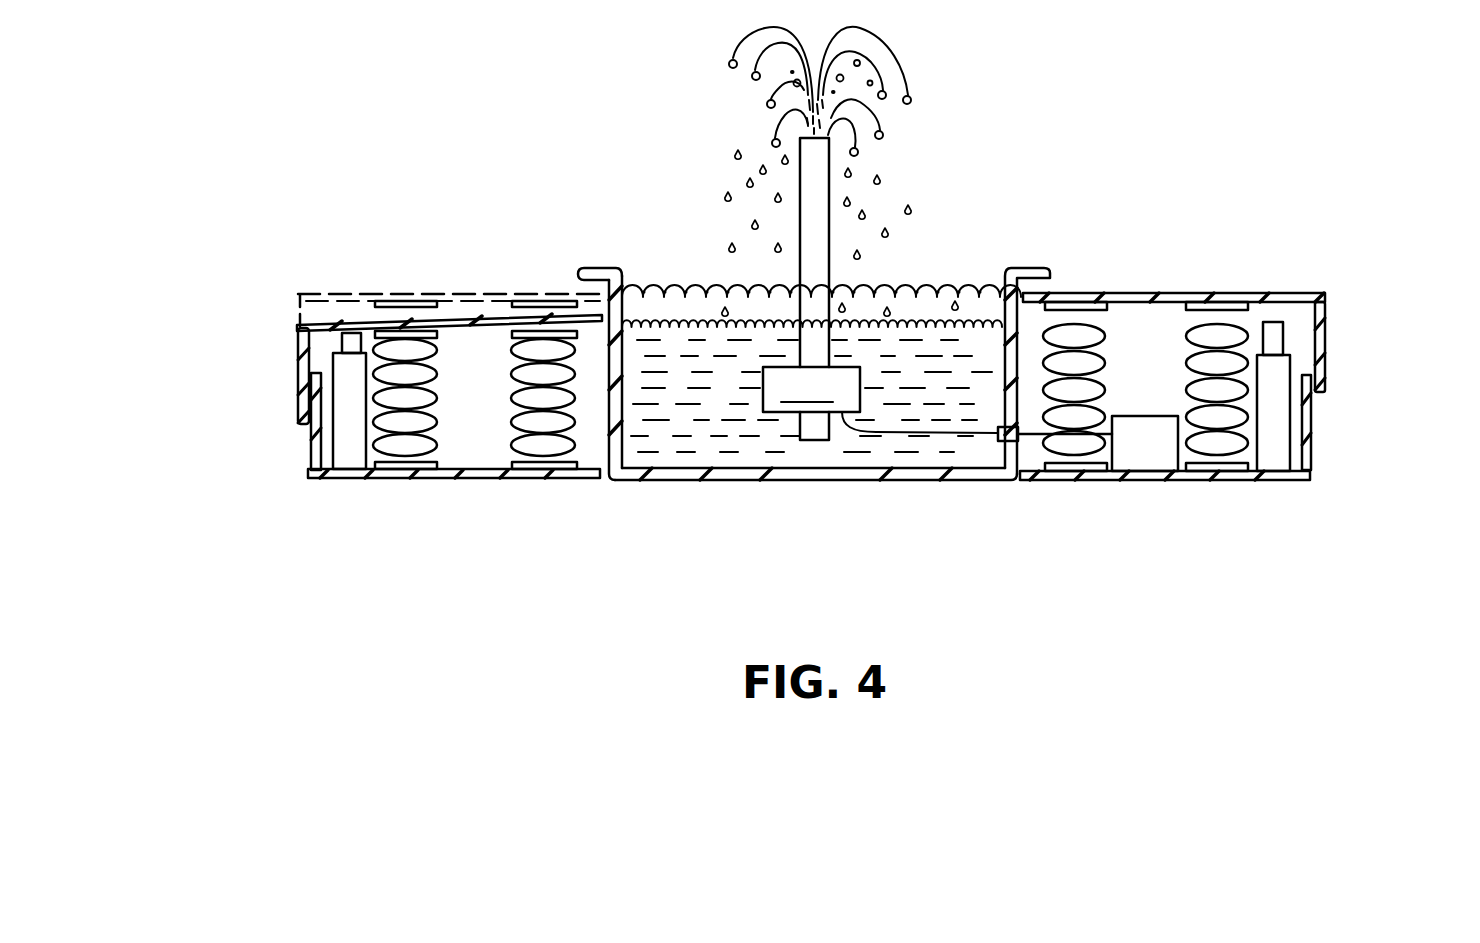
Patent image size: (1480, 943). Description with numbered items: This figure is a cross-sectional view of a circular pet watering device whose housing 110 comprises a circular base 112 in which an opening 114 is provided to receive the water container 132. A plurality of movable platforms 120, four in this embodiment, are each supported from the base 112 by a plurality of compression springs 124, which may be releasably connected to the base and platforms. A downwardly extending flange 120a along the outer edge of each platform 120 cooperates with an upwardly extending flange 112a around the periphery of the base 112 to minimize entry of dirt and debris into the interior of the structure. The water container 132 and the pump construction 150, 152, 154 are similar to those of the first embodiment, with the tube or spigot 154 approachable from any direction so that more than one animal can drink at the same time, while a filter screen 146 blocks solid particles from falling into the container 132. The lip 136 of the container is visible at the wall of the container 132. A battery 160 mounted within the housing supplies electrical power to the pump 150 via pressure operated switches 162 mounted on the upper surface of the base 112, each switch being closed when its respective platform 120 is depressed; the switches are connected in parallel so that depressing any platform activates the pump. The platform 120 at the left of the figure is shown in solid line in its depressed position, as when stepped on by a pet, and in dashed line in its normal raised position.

The housing 110 is at (292, 490).
The circular base 112 is at (473, 480).
The upwardly extending flange 112a is at (308, 447).
The opening 114 is at (603, 477).
The movable platform 120 is at (488, 318).
The downwardly extending flange 120a is at (300, 363).
The compression springs 124 is at (405, 458).
The water container 132 is at (757, 480).
The basin wall lip 136 is at (597, 268).
The filter screen 146 is at (917, 292).
The pump 150 is at (890, 404).
The pump construction element 152 is at (822, 440).
The tube or spigot 154 is at (830, 162).
The battery 160 is at (1148, 458).
The pressure operated switches 162 is at (347, 458).